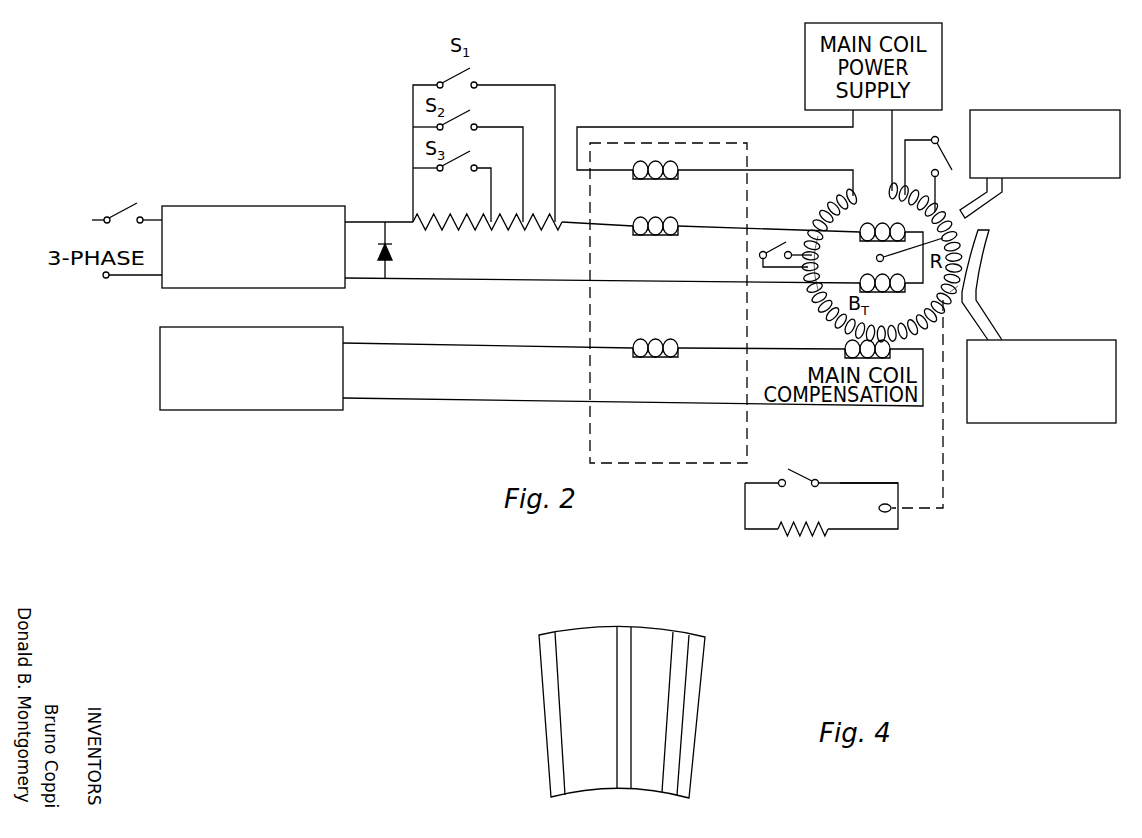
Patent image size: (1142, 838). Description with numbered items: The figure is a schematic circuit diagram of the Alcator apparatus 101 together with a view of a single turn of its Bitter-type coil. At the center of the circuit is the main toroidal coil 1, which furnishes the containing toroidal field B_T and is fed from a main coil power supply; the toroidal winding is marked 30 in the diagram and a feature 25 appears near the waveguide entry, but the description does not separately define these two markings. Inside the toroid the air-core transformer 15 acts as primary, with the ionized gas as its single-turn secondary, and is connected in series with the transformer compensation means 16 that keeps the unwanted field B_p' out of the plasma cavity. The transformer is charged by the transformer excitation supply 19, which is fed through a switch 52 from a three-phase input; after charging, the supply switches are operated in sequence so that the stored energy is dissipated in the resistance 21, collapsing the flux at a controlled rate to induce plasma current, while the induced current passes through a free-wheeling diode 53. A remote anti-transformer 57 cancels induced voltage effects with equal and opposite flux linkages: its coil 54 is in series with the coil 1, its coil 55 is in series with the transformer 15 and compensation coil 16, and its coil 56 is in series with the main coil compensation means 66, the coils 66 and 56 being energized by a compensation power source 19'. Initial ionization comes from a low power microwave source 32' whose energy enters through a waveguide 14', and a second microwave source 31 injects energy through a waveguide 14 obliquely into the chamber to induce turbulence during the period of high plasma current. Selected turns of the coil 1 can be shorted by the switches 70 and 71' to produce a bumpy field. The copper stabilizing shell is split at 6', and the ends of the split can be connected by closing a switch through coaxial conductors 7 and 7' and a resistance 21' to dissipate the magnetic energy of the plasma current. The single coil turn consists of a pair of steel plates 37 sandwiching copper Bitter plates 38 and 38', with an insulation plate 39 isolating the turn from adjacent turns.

In FIG. 2, the toroidal coil 1 is at (817, 297).
In FIG. 2, the coaxial conductor 7 is at (877, 516).
In FIG. 2, the coaxial conductor 7' is at (869, 454).
In FIG. 2, the split in copper shell 6' is at (849, 501).
In FIG. 2, the wave guide 14 is at (1017, 285).
In FIG. 2, the waveguide 14' is at (1028, 202).
In FIG. 2, the air-core transformer 15 is at (867, 222).
In FIG. 2, the transformer compensation means 16 is at (880, 286).
In FIG. 2, the transformer excitation supply 19 is at (253, 202).
In FIG. 2, the electric power source 19' is at (251, 398).
In FIG. 2, the resistance 21 is at (487, 241).
In FIG. 2, the resistance 21' is at (761, 548).
In FIG. 2, the plasma chamber port 25 is at (950, 292).
In FIG. 2, the main toroidal field coil 30 is at (823, 215).
In FIG. 2, the microwave source 31 is at (1058, 425).
In FIG. 2, the low power microwave source 32' is at (1045, 106).
In FIG. 4, the steel plates 37 is at (553, 707).
In FIG. 4, the copper Bitter plate 38 is at (577, 672).
In FIG. 4, the copper Bitter plate 38' is at (638, 673).
In FIG. 4, the insulation plate 39 is at (693, 687).
In FIG. 2, the switch 52 is at (127, 202).
In FIG. 2, the free-wheeling diode 53 is at (395, 253).
In FIG. 2, the anti-transformer coil 54 is at (677, 174).
In FIG. 2, the anti-transformer coil 55 is at (653, 220).
In FIG. 2, the anti-transformer coil 56 is at (657, 340).
In FIG. 2, the anti-transformer coil system 57 is at (698, 465).
In FIG. 2, the main coil compensation means 66 is at (858, 347).
In FIG. 2, the shorting switch 70 is at (775, 248).
In FIG. 2, the shorting switch 71' is at (954, 129).
In FIG. 2, the Alcator apparatus 101 is at (722, 113).